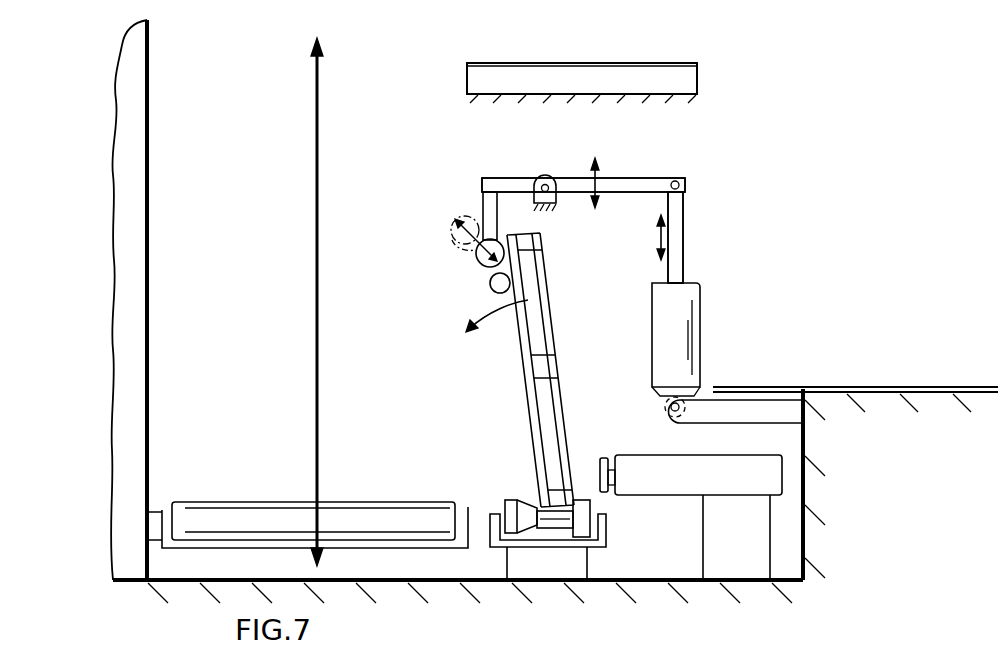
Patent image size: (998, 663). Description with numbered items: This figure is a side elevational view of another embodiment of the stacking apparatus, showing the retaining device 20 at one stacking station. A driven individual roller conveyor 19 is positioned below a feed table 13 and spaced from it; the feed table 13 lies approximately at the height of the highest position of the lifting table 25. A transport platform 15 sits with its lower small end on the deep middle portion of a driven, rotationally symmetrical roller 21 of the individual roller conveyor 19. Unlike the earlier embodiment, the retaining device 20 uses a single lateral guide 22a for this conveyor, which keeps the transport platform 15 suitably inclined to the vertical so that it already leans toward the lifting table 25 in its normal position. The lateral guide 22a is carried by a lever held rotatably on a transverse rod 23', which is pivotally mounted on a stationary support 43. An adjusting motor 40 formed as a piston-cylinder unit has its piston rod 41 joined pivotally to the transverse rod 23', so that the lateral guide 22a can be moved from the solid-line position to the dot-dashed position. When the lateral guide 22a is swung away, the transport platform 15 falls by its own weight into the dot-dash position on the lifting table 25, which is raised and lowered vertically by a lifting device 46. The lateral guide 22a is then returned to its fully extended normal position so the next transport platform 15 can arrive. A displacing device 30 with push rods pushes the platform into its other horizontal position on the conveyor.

The feed table 13 is at (682, 72).
The transport platform 15 is at (520, 358).
The individual roller conveyor 19 is at (490, 502).
The retaining device 20 is at (702, 199).
The roller 21 is at (517, 500).
The lateral guide 22a is at (450, 236).
The transverse rod 23' is at (584, 161).
The lifting table 25 is at (235, 496).
The displacing device 30 is at (645, 447).
The adjusting motor 40 is at (690, 333).
The piston rod 41 is at (684, 240).
The stationary support 43 is at (540, 172).
The lifting device 46 is at (145, 303).